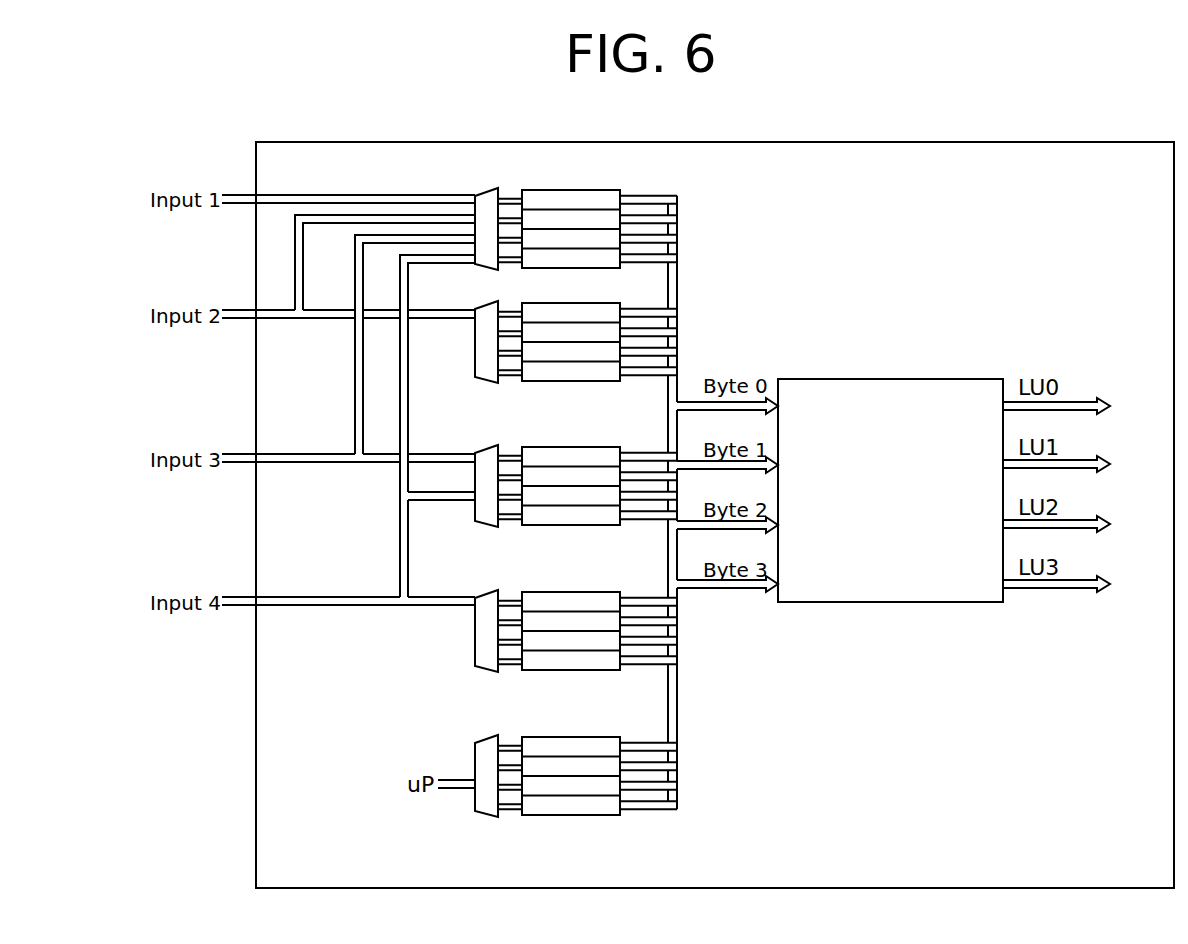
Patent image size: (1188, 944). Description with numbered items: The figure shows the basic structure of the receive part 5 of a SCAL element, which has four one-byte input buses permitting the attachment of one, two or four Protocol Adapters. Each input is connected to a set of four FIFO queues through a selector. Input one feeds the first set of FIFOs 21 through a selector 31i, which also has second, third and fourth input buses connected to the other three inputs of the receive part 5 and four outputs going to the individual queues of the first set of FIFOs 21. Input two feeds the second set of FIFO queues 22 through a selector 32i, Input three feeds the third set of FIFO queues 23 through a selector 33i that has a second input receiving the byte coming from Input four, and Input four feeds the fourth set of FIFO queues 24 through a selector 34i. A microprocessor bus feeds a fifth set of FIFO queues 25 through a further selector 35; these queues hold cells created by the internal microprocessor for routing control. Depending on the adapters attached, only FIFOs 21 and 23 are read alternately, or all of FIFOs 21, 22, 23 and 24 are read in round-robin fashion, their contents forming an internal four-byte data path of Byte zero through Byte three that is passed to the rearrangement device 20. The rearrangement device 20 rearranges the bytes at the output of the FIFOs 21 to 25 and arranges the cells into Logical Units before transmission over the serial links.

The receive part 5 is at (967, 142).
The rearrangement device 20 is at (923, 378).
The first set of FIFO queues 21 is at (578, 190).
The second set of FIFO queues 22 is at (565, 382).
The third set of FIFO queues 23 is at (565, 526).
The fourth set of FIFO queues 24 is at (565, 670).
The fifth set of FIFO queues 25 is at (577, 815).
The selector 31i is at (495, 188).
The selector 32i is at (477, 378).
The selector 33i is at (477, 522).
The selector 34i is at (475, 667).
The selector 35 is at (477, 811).